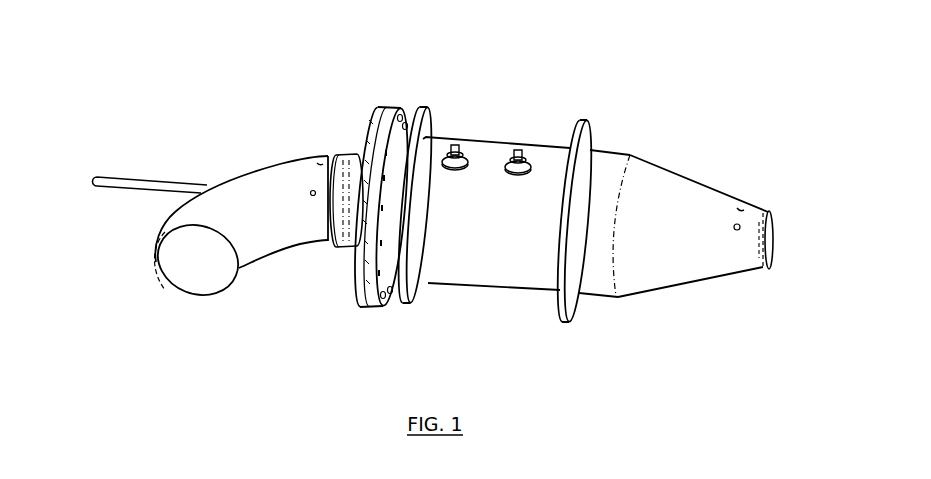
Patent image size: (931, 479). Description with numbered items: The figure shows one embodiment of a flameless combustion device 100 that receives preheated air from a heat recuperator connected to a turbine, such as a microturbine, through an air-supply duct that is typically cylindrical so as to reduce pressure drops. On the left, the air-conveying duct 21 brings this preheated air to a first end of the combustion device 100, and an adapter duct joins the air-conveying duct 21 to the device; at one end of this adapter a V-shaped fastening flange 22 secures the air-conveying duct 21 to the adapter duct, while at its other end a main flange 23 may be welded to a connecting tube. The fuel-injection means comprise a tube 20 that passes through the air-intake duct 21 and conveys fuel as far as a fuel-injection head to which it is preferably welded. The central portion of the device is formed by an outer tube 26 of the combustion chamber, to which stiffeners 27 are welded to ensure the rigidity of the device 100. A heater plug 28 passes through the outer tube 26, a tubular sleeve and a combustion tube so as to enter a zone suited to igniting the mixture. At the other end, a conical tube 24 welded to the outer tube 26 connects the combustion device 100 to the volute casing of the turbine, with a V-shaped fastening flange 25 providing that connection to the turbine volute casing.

The tube 20 is at (173, 178).
The air-conveying duct 21 is at (167, 210).
The fastening flange 22 is at (341, 149).
The main flange 23 is at (373, 110).
The conical tube 24 is at (722, 177).
The V-shaped fastening flange 25 is at (778, 203).
The outer tube 26 is at (608, 149).
The stiffeners 27 is at (563, 137).
The heater plug 28 is at (470, 190).
The flameless combustion device 100 is at (436, 203).